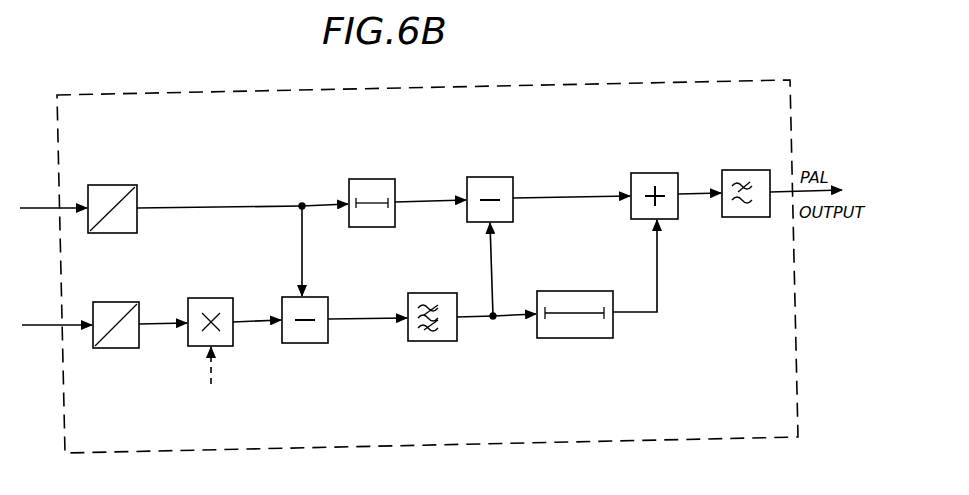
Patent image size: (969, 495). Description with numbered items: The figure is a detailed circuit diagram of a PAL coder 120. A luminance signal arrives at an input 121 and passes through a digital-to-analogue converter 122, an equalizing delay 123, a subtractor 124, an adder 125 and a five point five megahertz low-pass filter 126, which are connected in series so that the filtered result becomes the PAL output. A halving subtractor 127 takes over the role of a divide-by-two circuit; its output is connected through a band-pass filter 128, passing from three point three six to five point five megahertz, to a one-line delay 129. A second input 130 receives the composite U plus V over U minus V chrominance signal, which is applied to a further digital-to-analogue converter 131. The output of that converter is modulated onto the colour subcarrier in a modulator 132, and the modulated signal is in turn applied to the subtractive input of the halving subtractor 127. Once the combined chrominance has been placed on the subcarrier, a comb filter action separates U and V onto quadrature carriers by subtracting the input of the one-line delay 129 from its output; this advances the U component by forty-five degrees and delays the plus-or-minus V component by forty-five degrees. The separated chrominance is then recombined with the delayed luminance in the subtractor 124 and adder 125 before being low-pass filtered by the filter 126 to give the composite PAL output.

The PAL coder 120 is at (427, 259).
The input 121 is at (67, 210).
The digital-to-analogue converter 122 is at (135, 188).
The equalizing delay 123 is at (361, 228).
The subtractor 124 is at (493, 175).
The adder 125 is at (651, 172).
The 5.5 MHz low-pass filter 126 is at (746, 168).
The halving subtractor 127 is at (303, 343).
The 3.36 to 5.5 MHz band-pass filter 128 is at (457, 328).
The one-line delay 129 is at (581, 338).
The second input 130 is at (68, 327).
The digital-to-analogue converter 131 is at (130, 348).
The modulator 132 is at (210, 297).